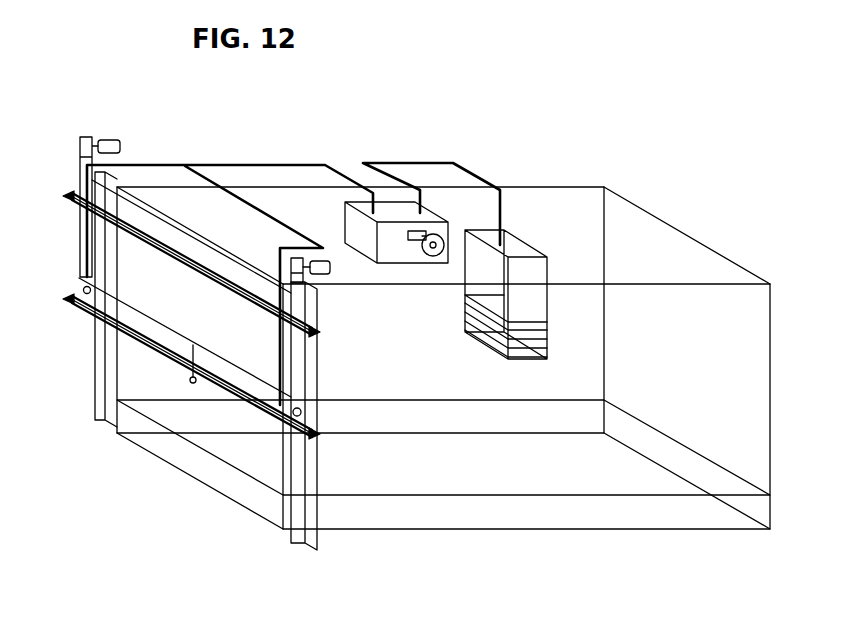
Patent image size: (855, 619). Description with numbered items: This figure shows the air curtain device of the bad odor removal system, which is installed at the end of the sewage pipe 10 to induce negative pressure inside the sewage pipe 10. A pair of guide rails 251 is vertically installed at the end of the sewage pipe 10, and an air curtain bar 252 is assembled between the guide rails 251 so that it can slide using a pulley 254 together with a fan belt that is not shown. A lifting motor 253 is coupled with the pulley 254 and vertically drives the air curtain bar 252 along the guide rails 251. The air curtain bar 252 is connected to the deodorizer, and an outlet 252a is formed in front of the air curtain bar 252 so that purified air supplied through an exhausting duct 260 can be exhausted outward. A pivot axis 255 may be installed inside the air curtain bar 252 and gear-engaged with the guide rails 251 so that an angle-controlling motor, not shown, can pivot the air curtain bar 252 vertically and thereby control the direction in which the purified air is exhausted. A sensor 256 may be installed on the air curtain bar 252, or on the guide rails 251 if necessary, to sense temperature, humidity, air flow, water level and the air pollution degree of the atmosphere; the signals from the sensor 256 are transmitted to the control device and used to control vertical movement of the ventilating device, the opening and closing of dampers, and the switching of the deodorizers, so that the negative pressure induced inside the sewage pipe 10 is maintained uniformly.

The sewage pipe 10 is at (683, 228).
The exhausting duct 260 is at (258, 163).
The guide rails 251 is at (97, 383).
The air curtain bar 252 is at (232, 388).
The outlet 252a is at (130, 317).
The lifting motor 253 is at (297, 258).
The pulley 254 is at (322, 276).
The pivot axis 255 is at (303, 412).
The sensor 256 is at (190, 380).